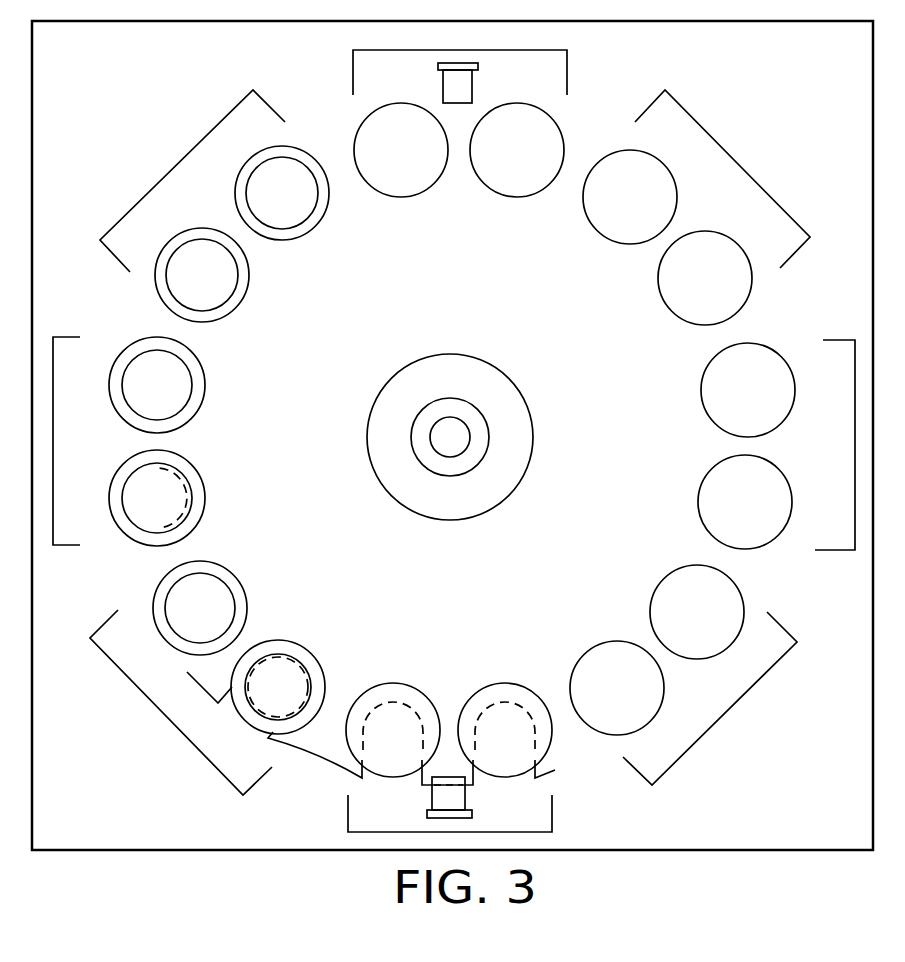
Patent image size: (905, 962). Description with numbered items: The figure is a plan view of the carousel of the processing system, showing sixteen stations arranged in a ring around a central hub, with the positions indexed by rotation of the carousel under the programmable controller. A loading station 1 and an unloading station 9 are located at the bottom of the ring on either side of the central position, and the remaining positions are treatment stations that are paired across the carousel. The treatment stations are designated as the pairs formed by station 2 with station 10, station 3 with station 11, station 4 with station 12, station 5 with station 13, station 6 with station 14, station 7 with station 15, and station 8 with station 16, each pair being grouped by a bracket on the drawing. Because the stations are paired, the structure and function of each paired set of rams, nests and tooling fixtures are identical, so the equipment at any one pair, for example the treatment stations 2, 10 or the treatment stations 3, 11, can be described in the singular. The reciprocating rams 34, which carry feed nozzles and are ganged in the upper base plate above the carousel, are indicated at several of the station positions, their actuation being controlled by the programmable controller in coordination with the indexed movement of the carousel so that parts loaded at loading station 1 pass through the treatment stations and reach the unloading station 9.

The loading station 1 is at (505, 752).
The treatment station 2 is at (273, 700).
The treatment station 3 is at (139, 498).
The treatment station 4 is at (195, 267).
The treatment station 5 is at (401, 128).
The treatment station 6 is at (634, 184).
The treatment station 7 is at (768, 390).
The treatment station 8 is at (707, 616).
The unloading station 9 is at (393, 752).
The treatment station 10 is at (182, 613).
The treatment station 11 is at (132, 385).
The treatment station 12 is at (276, 181).
The treatment station 13 is at (517, 128).
The treatment station 14 is at (714, 265).
The treatment station 15 is at (771, 502).
The treatment station 16 is at (631, 694).
The reciprocating rams 34 is at (413, 173).